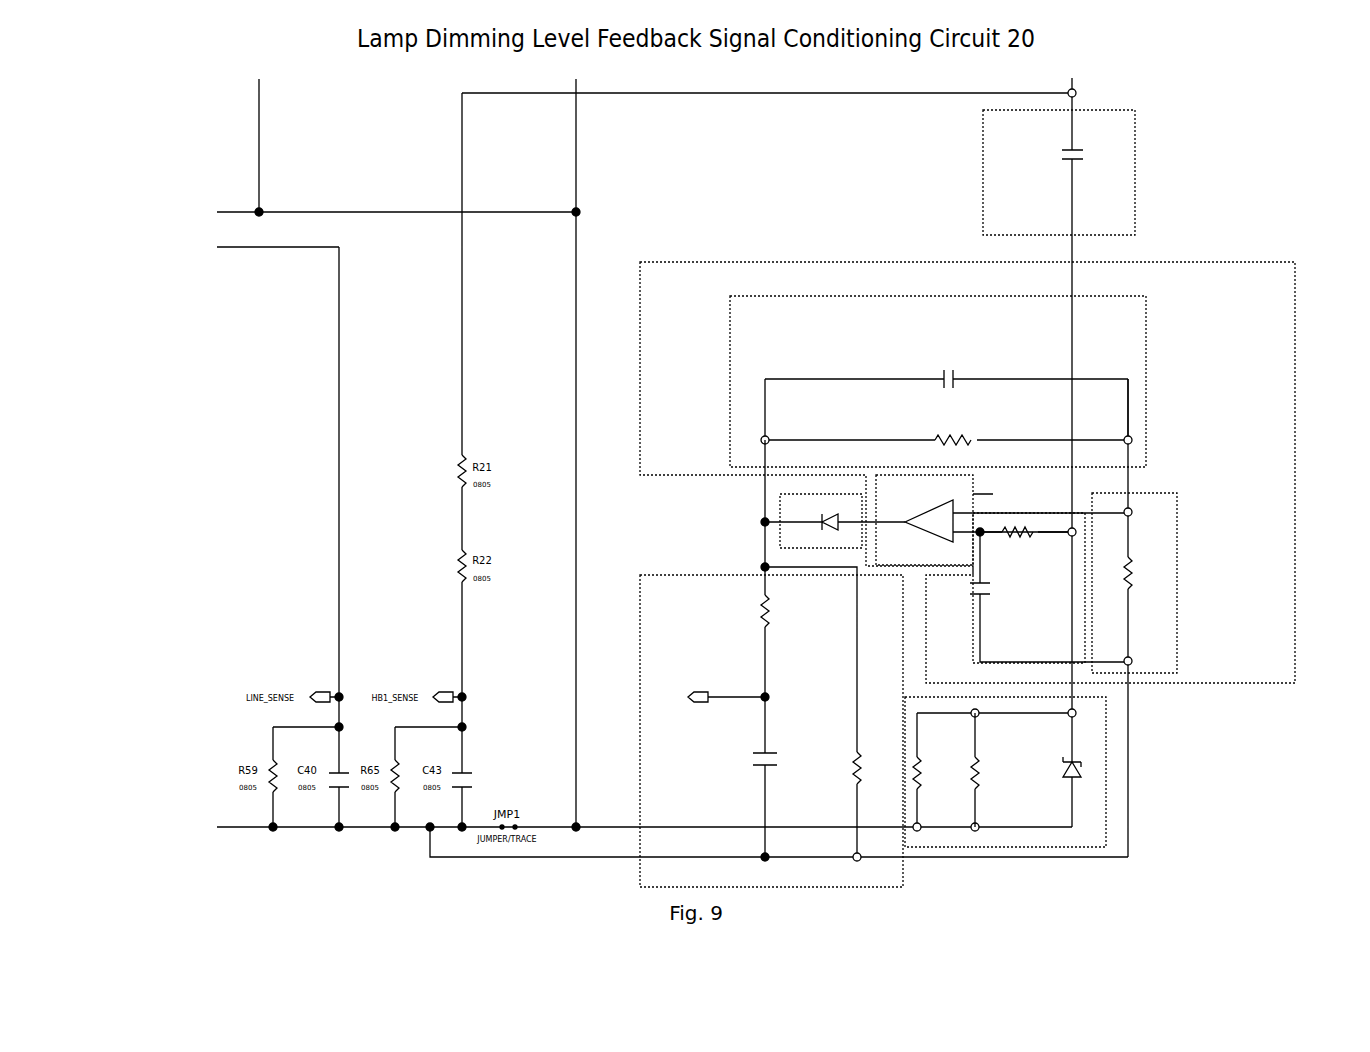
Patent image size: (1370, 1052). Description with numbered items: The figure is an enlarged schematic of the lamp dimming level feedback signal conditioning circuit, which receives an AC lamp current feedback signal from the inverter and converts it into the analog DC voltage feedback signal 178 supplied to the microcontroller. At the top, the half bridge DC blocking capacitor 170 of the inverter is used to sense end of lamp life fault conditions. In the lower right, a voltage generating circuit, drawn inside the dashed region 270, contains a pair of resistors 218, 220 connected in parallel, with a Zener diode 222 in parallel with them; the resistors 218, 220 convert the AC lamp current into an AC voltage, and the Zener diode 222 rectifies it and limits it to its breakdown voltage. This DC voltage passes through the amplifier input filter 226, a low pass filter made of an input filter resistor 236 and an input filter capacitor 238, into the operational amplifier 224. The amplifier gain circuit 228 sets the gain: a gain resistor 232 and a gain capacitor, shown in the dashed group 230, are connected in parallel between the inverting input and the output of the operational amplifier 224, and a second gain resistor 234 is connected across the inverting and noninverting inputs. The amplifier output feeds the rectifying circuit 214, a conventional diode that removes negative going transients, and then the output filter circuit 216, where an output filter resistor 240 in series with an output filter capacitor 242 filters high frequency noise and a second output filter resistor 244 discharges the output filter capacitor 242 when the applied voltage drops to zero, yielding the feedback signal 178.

The half bridge DC blocking capacitor 170 is at (1135, 157).
The amplifier gain circuit 228 is at (1147, 390).
The gain resistor 232 is at (978, 365).
The resistor R4 230 is at (992, 429).
The rectifying circuit 214 is at (785, 513).
The operational amplifier 224 is at (1004, 518).
The amplifier input filter 226 is at (973, 619).
The input filter resistor 236 is at (1040, 556).
The input filter capacitor 238 is at (1000, 606).
The second gain resistor 234 is at (1153, 544).
The output filter circuit 216 is at (640, 623).
The output filter resistor 240 is at (704, 591).
The analog DC voltage feedback signal 178 is at (710, 703).
The output filter capacitor 242 is at (780, 731).
The second output filter resistor 244 is at (840, 768).
The clamp circuit 270 is at (1107, 738).
The resistor 218 is at (942, 800).
The resistor 220 is at (1000, 800).
The Zener diode 222 is at (1100, 770).